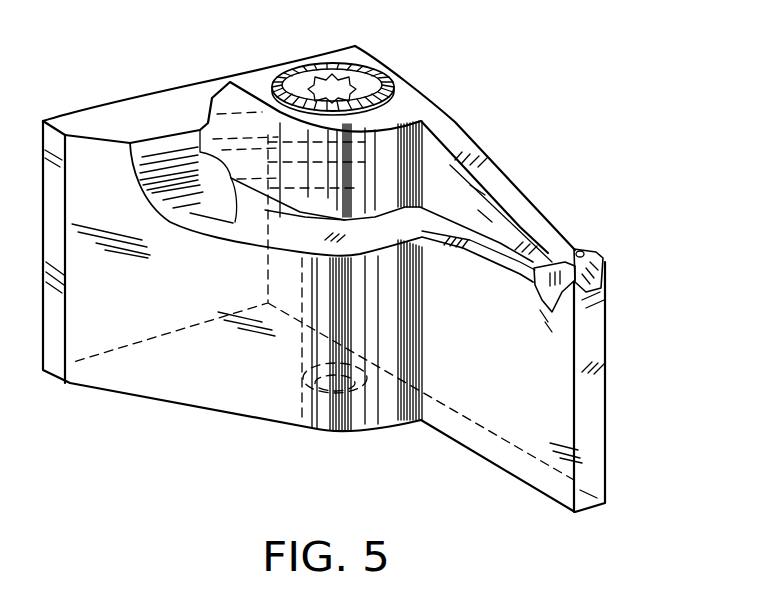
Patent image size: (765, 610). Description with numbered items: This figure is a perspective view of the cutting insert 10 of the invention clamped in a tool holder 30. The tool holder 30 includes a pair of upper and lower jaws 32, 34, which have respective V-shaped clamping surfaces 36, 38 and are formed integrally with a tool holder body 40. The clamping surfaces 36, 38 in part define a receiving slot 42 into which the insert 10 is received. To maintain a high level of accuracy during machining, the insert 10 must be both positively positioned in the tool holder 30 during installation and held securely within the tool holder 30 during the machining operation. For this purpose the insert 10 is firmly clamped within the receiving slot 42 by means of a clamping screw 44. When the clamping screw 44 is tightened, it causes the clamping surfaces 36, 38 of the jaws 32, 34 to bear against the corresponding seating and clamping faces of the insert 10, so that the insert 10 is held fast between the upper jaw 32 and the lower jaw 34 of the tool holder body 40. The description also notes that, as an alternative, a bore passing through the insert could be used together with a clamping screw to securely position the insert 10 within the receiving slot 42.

The insert 10 is at (565, 312).
The tool holder 30 is at (502, 114).
The upper jaw 32 is at (502, 190).
The lower jaw 34 is at (560, 353).
The V-shaped clamping surface 36 is at (605, 258).
The V-shaped clamping surface 38 is at (535, 303).
The tool holder body 40 is at (200, 355).
The receiving slot 42 is at (473, 252).
The clamping screw 44 is at (387, 72).